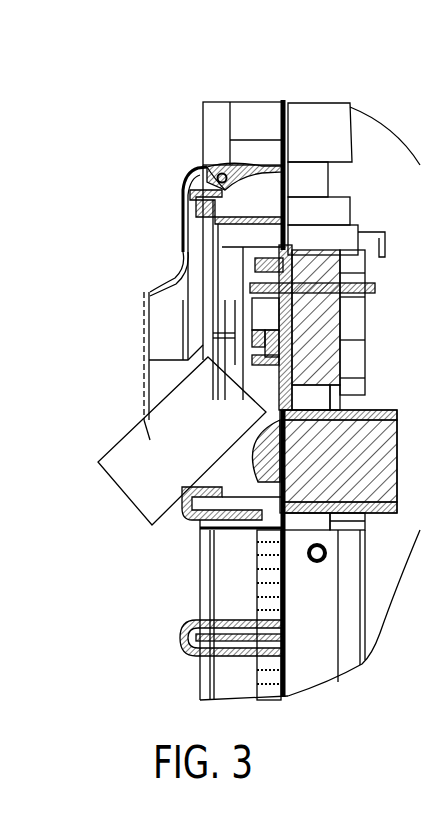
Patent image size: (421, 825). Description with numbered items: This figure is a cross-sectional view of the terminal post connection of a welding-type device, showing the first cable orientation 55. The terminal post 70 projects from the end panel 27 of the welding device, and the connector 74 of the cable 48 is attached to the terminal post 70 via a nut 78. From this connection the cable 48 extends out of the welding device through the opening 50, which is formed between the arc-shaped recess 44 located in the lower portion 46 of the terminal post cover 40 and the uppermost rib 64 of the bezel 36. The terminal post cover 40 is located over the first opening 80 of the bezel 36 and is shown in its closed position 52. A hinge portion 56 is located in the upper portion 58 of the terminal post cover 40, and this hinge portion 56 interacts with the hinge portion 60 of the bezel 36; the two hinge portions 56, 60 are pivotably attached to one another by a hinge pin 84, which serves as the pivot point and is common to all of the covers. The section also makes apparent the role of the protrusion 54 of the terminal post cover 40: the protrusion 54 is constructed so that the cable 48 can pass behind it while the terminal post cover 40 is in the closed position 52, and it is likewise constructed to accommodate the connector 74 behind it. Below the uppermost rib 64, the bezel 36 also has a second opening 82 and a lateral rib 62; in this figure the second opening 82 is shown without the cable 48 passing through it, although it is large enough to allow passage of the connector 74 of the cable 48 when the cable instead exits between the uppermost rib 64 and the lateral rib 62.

The end panel 27 is at (303, 350).
The bezel 36 is at (212, 113).
The terminal post cover 40 is at (183, 216).
The arc-shaped recess 44 is at (142, 421).
The lower portion 46 is at (140, 390).
The cable 48 is at (182, 449).
The opening 50 is at (126, 497).
The closed position 52 is at (191, 56).
The protrusion 54 is at (145, 312).
The first cable orientation 55 is at (75, 338).
The hinge portion 56 is at (210, 175).
The upper portion 58 is at (103, 184).
The hinge portion 60 is at (248, 172).
The lateral rib 62 is at (183, 632).
The uppermost rib 64 is at (192, 524).
The terminal post 70 is at (245, 298).
The connector 74 is at (230, 365).
The nut 78 is at (146, 274).
The first opening 80 is at (202, 348).
The second opening 82 is at (240, 531).
The hinge pin 84 is at (245, 165).